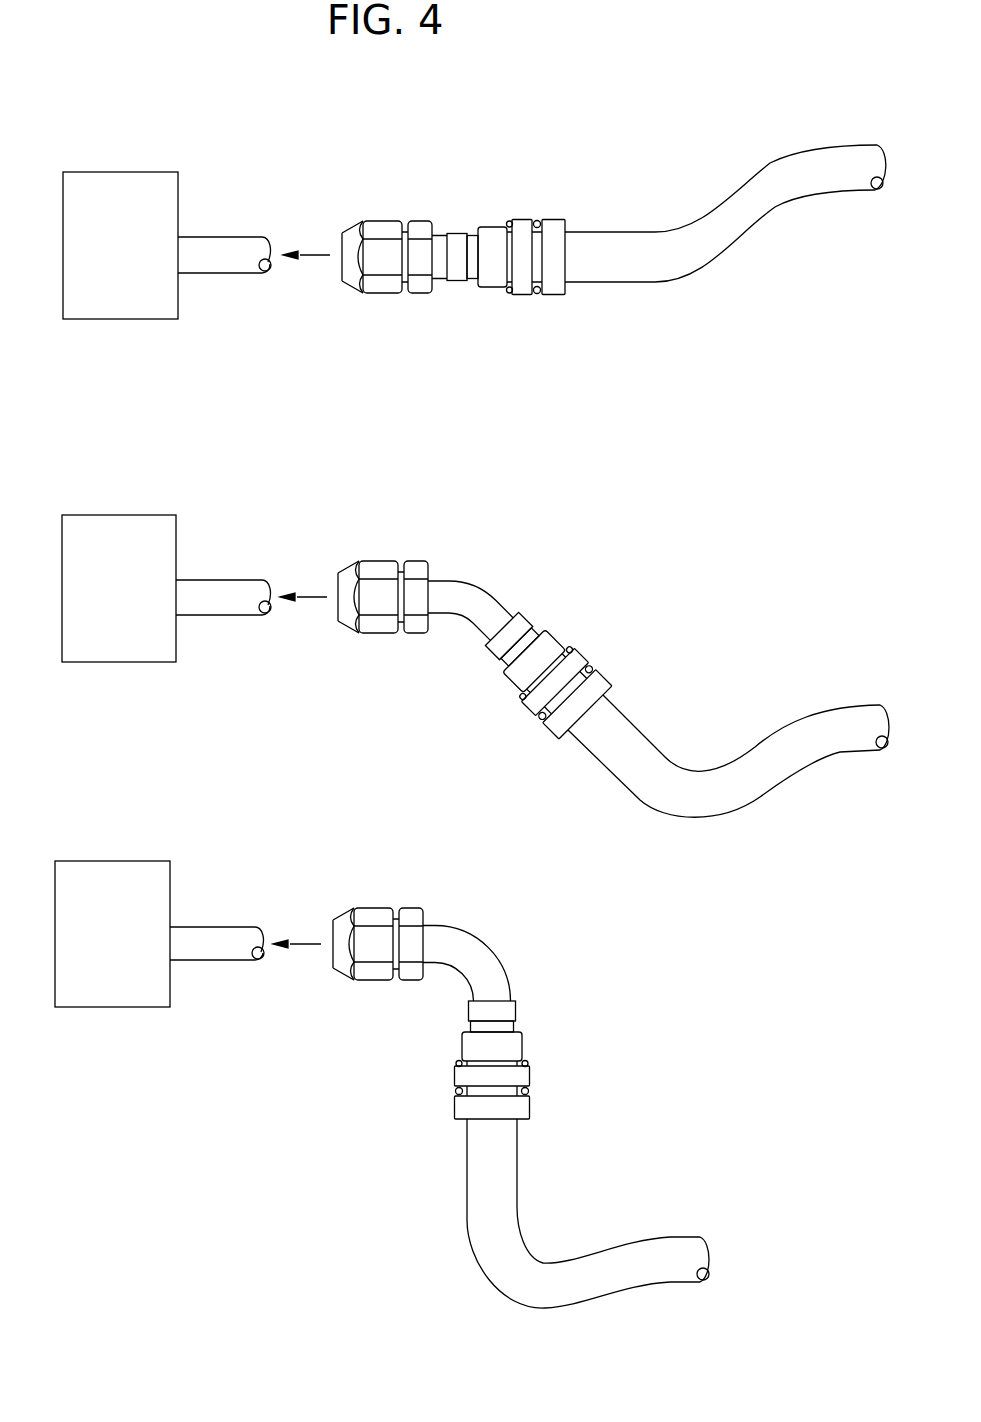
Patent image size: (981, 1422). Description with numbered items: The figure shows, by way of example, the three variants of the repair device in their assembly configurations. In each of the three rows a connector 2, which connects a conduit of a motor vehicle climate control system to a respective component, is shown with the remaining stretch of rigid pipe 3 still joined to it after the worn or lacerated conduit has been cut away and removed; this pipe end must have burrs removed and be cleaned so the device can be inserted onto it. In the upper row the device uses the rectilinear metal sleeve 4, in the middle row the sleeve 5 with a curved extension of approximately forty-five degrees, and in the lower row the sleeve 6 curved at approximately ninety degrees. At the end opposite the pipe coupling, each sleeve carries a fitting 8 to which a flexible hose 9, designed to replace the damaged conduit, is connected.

The connector 2 is at (112, 260).
The stretch of rigid pipe 3 is at (225, 248).
The metal sleeve 4 is at (440, 247).
The sleeve 5 is at (475, 593).
The sleeve 6 is at (477, 958).
The fitting 8 is at (543, 194).
The flexible hose 9 is at (653, 245).